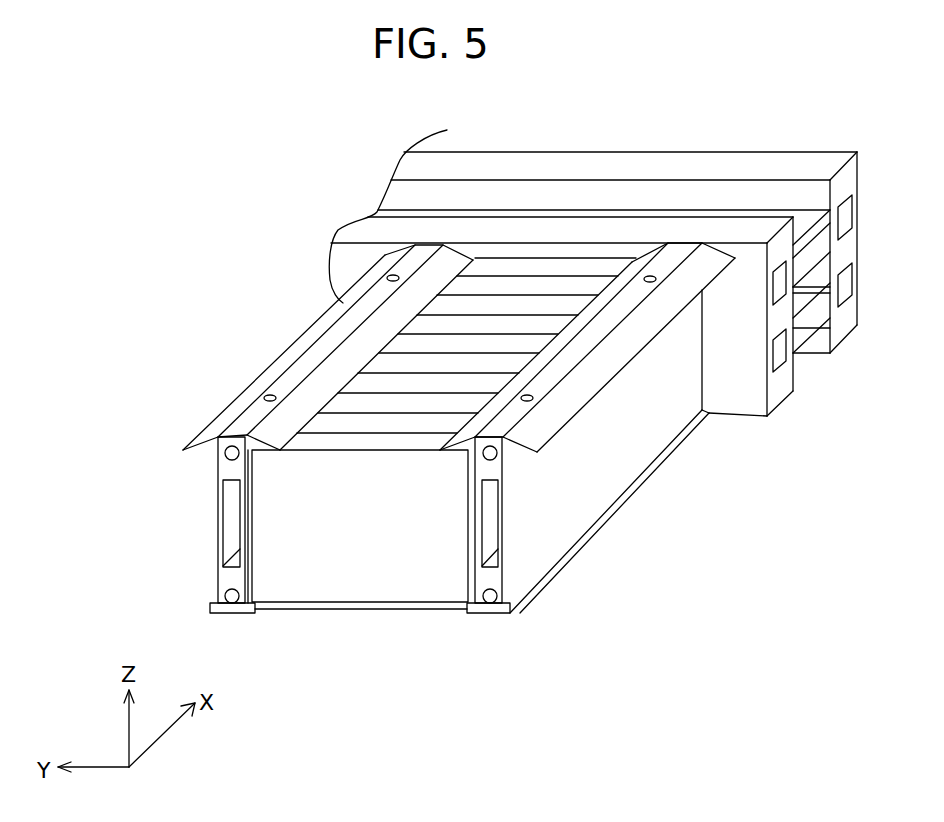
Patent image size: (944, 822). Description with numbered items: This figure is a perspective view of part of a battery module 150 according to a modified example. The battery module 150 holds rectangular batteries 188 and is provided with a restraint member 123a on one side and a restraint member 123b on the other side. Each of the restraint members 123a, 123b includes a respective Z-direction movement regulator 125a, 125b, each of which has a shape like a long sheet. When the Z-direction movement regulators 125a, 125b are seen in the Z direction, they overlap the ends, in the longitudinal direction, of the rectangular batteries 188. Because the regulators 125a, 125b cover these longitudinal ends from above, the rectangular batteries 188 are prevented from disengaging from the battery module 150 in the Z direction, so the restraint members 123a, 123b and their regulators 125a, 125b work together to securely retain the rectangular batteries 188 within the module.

The battery module 150 is at (473, 352).
The restraint member 123a is at (216, 477).
The restraint member 123b is at (586, 468).
The Z-direction movement regulator 125a is at (417, 290).
The Z-direction movement regulator 125b is at (606, 285).
The rectangular batteries 188 is at (385, 363).